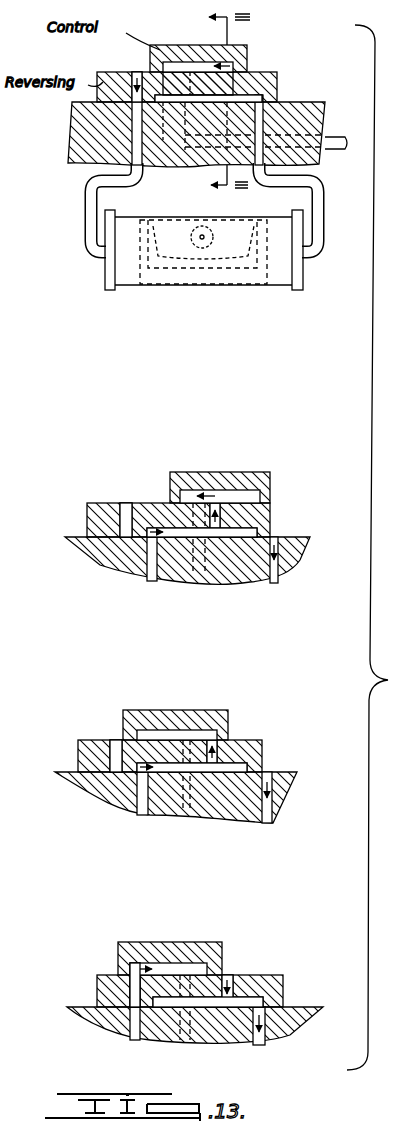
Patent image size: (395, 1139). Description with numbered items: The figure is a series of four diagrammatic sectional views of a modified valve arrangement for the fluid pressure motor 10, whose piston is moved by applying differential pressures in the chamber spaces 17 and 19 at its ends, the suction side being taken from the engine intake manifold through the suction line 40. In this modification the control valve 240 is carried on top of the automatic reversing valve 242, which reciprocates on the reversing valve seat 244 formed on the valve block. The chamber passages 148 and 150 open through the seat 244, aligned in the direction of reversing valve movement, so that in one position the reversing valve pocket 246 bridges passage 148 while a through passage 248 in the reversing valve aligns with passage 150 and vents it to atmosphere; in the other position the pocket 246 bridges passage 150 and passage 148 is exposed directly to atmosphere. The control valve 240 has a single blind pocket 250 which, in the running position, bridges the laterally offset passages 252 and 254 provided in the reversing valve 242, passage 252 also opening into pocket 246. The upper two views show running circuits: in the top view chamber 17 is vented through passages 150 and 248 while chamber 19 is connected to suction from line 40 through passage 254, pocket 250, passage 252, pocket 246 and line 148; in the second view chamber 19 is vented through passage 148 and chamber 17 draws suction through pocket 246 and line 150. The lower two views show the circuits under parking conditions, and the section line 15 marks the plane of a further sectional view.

The motor 10 is at (193, 287).
The section line 15- 15 is at (207, 100).
The chamber space 17 is at (128, 290).
The chamber space 19 is at (283, 290).
The suction line 40 is at (340, 148).
The chamber passage 148 is at (311, 200).
The chamber passage 150 is at (84, 204).
The control valve 240 is at (256, 52).
The automatic reversing valve 242 is at (279, 85).
The reversing valve seat 244 is at (298, 102).
The reversing valve pocket 246 is at (160, 100).
The through passage 248 is at (120, 80).
The blind pocket 250 is at (205, 62).
The passage 252 is at (214, 68).
The passage 254 is at (166, 150).